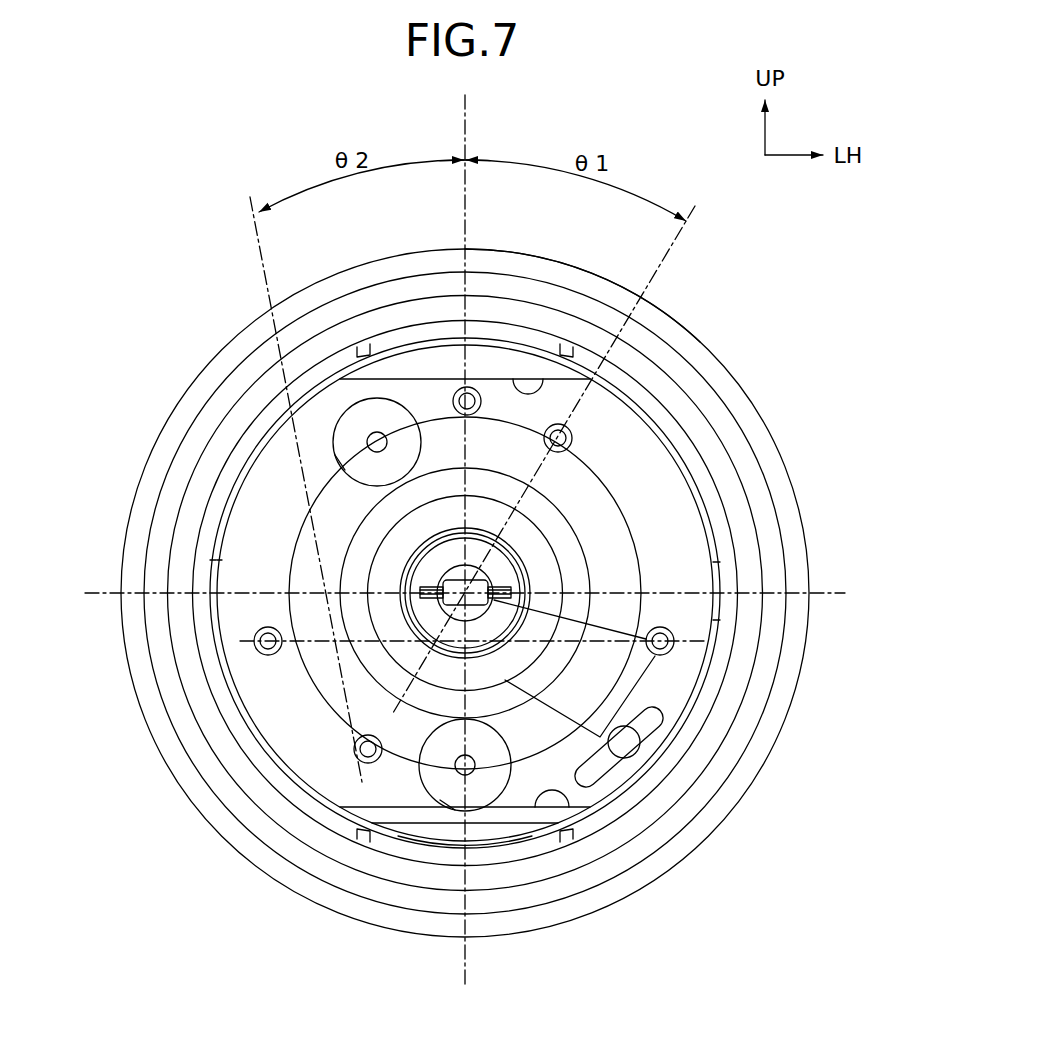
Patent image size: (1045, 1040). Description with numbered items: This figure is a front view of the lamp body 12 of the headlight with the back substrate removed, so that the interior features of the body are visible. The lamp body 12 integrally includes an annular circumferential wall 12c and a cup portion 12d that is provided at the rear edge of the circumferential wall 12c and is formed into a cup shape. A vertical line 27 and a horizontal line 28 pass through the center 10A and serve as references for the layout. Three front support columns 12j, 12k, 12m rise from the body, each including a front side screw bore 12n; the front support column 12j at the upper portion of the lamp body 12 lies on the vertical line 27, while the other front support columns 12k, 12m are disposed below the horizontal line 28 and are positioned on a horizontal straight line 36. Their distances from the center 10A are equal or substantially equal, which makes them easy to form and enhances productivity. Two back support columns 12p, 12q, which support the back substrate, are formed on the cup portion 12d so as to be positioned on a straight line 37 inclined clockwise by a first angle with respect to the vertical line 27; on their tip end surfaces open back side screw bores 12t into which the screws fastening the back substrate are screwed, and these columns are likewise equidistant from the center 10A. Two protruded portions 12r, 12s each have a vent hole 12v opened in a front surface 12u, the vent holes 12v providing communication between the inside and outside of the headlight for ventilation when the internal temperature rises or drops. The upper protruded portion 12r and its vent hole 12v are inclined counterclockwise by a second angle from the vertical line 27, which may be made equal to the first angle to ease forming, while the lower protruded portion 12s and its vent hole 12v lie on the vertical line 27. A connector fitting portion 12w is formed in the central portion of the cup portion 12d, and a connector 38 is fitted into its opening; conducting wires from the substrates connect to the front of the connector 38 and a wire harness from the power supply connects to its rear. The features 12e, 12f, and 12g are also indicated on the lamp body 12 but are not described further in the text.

The center 10A is at (516, 541).
The lamp body 12 is at (243, 436).
The annular circumferential wall 12c is at (226, 488).
The cup portion 12d is at (248, 530).
The housing notch 12e is at (538, 380).
The housing lower flat 12f is at (588, 812).
The housing recess 12g is at (645, 733).
The front support column 12j is at (457, 390).
The front support column 12k is at (674, 634).
The front support column 12m is at (255, 636).
The front side screw bore 12n is at (478, 392).
The back support column 12p is at (618, 287).
The back support column 12q is at (345, 764).
The protruded portion 12r is at (338, 416).
The protruded portion 12s is at (514, 793).
The back side screw bore 12t is at (572, 437).
The front surface 12u is at (345, 450).
The vent hole 12v is at (386, 400).
The connector fitting portion 12w is at (540, 493).
The vertical line 27 is at (468, 120).
The horizontal line 28 is at (826, 592).
The horizontal straight line 36 is at (728, 688).
The straight line 37 is at (684, 249).
The connector 38 is at (658, 722).